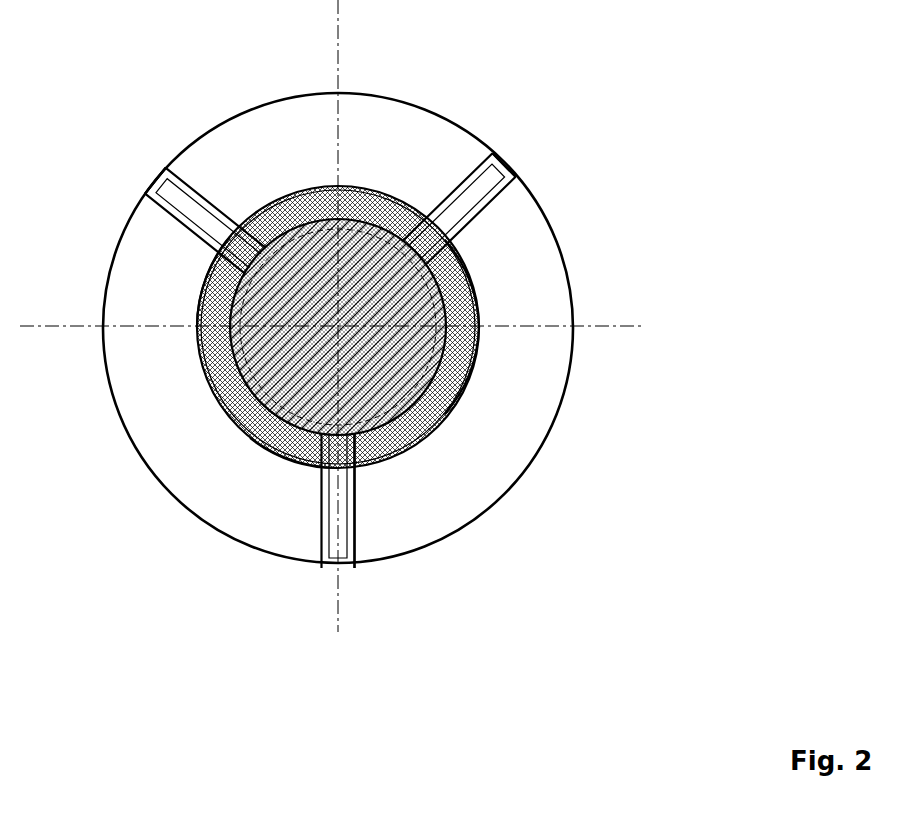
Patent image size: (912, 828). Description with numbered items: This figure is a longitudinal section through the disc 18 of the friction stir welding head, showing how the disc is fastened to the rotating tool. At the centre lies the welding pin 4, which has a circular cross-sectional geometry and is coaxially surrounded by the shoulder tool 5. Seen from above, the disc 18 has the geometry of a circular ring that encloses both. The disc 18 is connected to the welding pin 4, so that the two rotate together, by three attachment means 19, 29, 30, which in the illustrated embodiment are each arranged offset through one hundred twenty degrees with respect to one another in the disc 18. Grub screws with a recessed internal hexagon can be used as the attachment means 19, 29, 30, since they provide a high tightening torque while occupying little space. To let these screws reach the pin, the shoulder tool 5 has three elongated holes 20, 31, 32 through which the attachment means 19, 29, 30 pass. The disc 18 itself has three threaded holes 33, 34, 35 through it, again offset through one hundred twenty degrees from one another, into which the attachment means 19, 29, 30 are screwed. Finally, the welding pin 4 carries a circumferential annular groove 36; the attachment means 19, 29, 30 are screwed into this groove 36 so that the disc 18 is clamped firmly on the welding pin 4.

The welding pin 4 is at (403, 394).
The shoulder tool 5 is at (380, 191).
The disc 18 is at (550, 392).
The attachment means 19 is at (343, 528).
The elongated hole 20 is at (318, 463).
The attachment means 29 is at (160, 190).
The attachment means 30 is at (501, 176).
The elongated hole 31 is at (200, 287).
The elongated hole 32 is at (470, 280).
The threaded hole 33 is at (224, 207).
The threaded hole 34 is at (450, 188).
The threaded hole 35 is at (362, 501).
The circumferential annular groove 36 is at (475, 347).